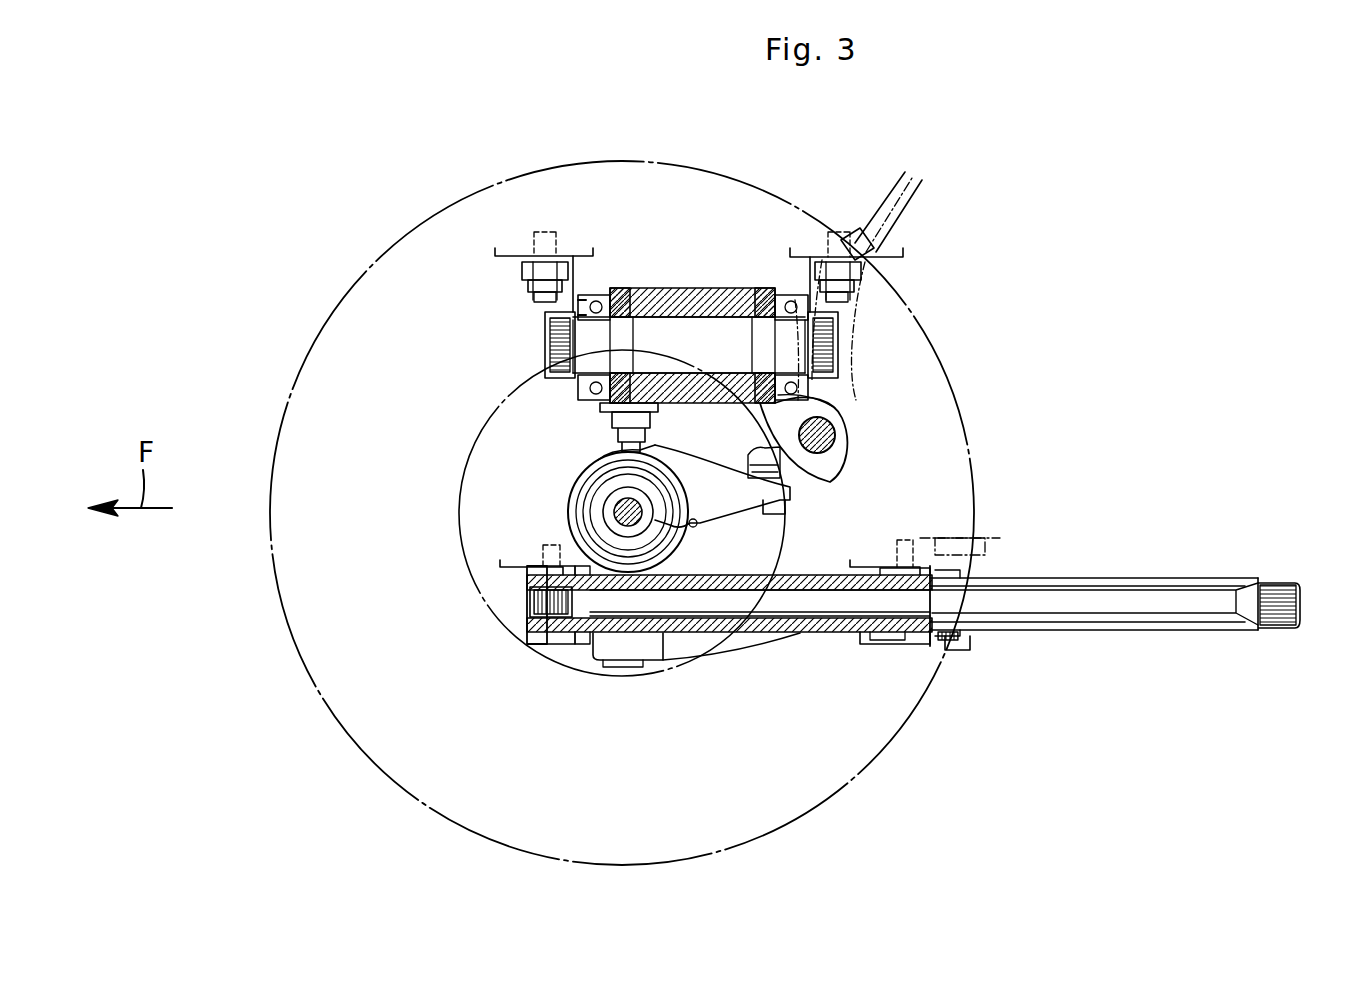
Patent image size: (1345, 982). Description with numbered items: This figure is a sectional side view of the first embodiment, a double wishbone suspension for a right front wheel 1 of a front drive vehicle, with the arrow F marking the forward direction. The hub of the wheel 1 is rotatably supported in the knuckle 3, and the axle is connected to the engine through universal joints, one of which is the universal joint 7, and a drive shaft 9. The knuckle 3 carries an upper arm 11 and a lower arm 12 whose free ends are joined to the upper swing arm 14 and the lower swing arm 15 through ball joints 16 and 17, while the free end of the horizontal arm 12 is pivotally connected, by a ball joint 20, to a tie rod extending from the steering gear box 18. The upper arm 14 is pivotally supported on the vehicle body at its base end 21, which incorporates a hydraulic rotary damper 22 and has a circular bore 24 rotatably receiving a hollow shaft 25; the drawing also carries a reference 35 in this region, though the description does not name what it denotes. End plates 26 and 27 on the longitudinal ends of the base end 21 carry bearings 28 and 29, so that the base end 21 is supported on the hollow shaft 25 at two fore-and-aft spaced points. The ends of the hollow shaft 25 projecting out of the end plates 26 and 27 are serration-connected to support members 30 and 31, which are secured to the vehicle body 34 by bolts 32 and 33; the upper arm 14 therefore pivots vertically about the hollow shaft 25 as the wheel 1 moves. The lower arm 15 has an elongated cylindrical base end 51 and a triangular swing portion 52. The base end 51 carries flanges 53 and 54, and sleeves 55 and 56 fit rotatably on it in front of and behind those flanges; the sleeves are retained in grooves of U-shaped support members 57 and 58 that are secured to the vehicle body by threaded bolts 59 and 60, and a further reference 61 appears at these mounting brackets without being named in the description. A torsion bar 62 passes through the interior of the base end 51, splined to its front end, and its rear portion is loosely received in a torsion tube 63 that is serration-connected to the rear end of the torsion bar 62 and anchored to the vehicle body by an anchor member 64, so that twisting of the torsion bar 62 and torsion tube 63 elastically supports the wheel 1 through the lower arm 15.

The wheel 1 is at (514, 180).
The knuckle 3 is at (608, 447).
The universal joint 7 is at (585, 478).
The drive shaft 9 is at (614, 512).
The upper arm 11 is at (651, 421).
The lower arm 12 is at (713, 477).
The upper swing arm 14 is at (643, 290).
The lower swing arm 15 is at (696, 657).
The ball joint 16 is at (604, 408).
The ball joint 17 is at (630, 669).
The steering gear box 18 is at (800, 470).
The ball joint 20 is at (760, 458).
The base end 21 is at (712, 292).
The hydraulic rotary damper 22 is at (737, 300).
The circular bore 24 is at (681, 305).
The hollow shaft 25 is at (735, 353).
The end plate 26 is at (621, 290).
The end plate 27 is at (769, 296).
The bearing 28 is at (600, 298).
The bearing 29 is at (795, 300).
The support member 30 is at (548, 316).
The support member 31 is at (832, 318).
The bolt 32 is at (533, 294).
The bolt 33 is at (848, 296).
The vehicle body 34 is at (507, 262).
The axis 35 is at (667, 300).
The base end 51 is at (797, 632).
The swing portion 52 is at (745, 640).
The flange 53 is at (585, 640).
The flange 54 is at (872, 642).
The sleeve 55 is at (548, 640).
The sleeve 56 is at (900, 640).
The U-shaped support member 57 is at (540, 645).
The U-shaped support member 58 is at (948, 652).
The threaded bolt 59 is at (550, 549).
The threaded bolt 60 is at (905, 545).
The frame bracket 61 is at (503, 580).
The torsion bar 62 is at (1036, 626).
The torsion tube 63 is at (1110, 578).
The anchor member 64 is at (995, 545).